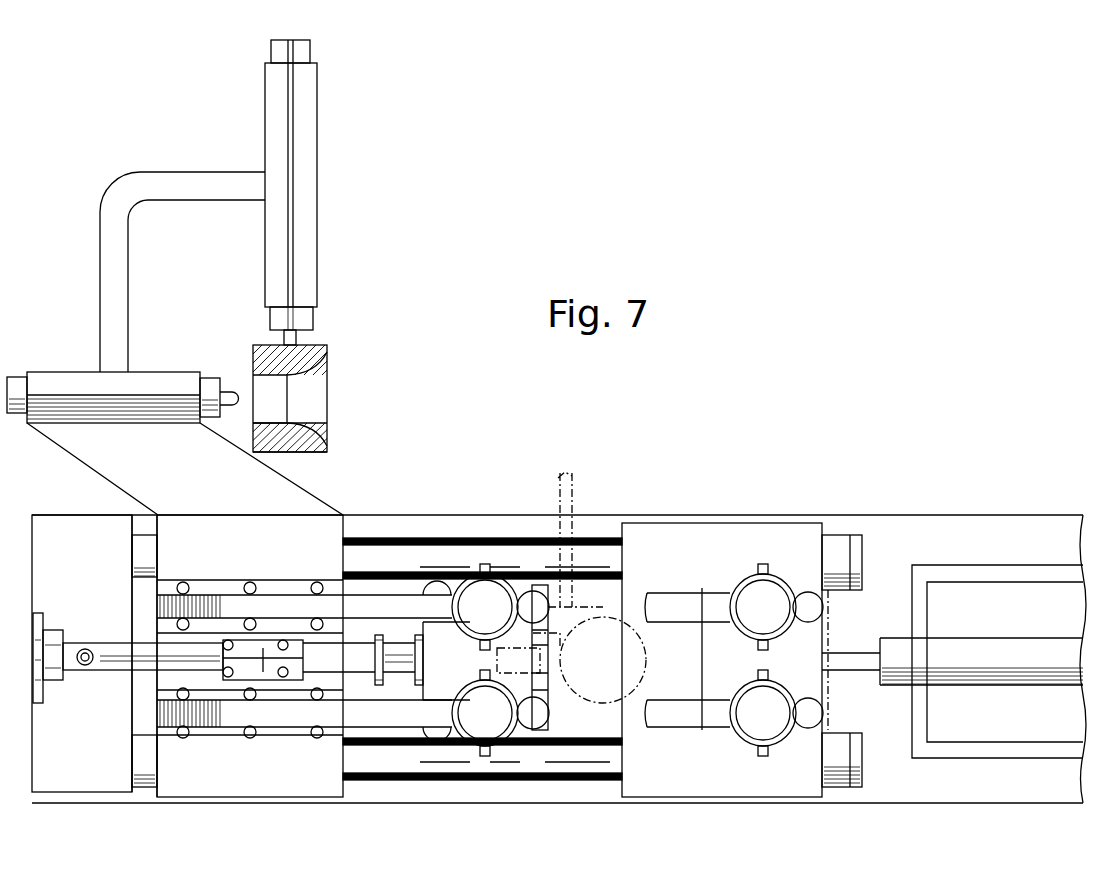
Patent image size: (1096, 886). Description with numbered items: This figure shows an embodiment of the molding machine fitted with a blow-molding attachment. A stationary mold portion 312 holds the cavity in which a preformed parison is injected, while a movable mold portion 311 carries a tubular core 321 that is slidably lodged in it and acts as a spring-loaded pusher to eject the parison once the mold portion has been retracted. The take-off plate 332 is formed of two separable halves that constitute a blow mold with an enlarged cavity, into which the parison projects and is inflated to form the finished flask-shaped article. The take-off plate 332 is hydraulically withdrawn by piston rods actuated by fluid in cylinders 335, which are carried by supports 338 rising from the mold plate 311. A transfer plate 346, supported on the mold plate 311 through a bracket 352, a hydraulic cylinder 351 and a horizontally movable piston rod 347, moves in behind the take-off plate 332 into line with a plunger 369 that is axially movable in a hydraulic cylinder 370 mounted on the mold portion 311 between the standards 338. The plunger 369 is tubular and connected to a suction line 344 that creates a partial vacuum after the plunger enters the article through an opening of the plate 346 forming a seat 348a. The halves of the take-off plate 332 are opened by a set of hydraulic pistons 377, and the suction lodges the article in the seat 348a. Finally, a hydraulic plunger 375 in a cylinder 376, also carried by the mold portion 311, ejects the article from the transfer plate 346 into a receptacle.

The movable mold portion 311 is at (303, 783).
The stationary mold portion 312 is at (720, 523).
The core 321 is at (400, 673).
The take-off plate 332 is at (550, 742).
The cylinders 335 is at (470, 688).
The supports 338 is at (362, 700).
The suction line 344 is at (83, 649).
The transfer plate 346 is at (327, 360).
The piston rod 347 is at (297, 334).
The seat 348a is at (308, 438).
The hydraulic cylinder 351 is at (312, 118).
The bracket 352 is at (168, 172).
The plunger 369 is at (115, 640).
The hydraulic cylinder 370 is at (62, 690).
The hydraulic plunger 375 is at (233, 390).
The cylinder 376 is at (58, 372).
The hydraulic pistons 377 is at (523, 597).